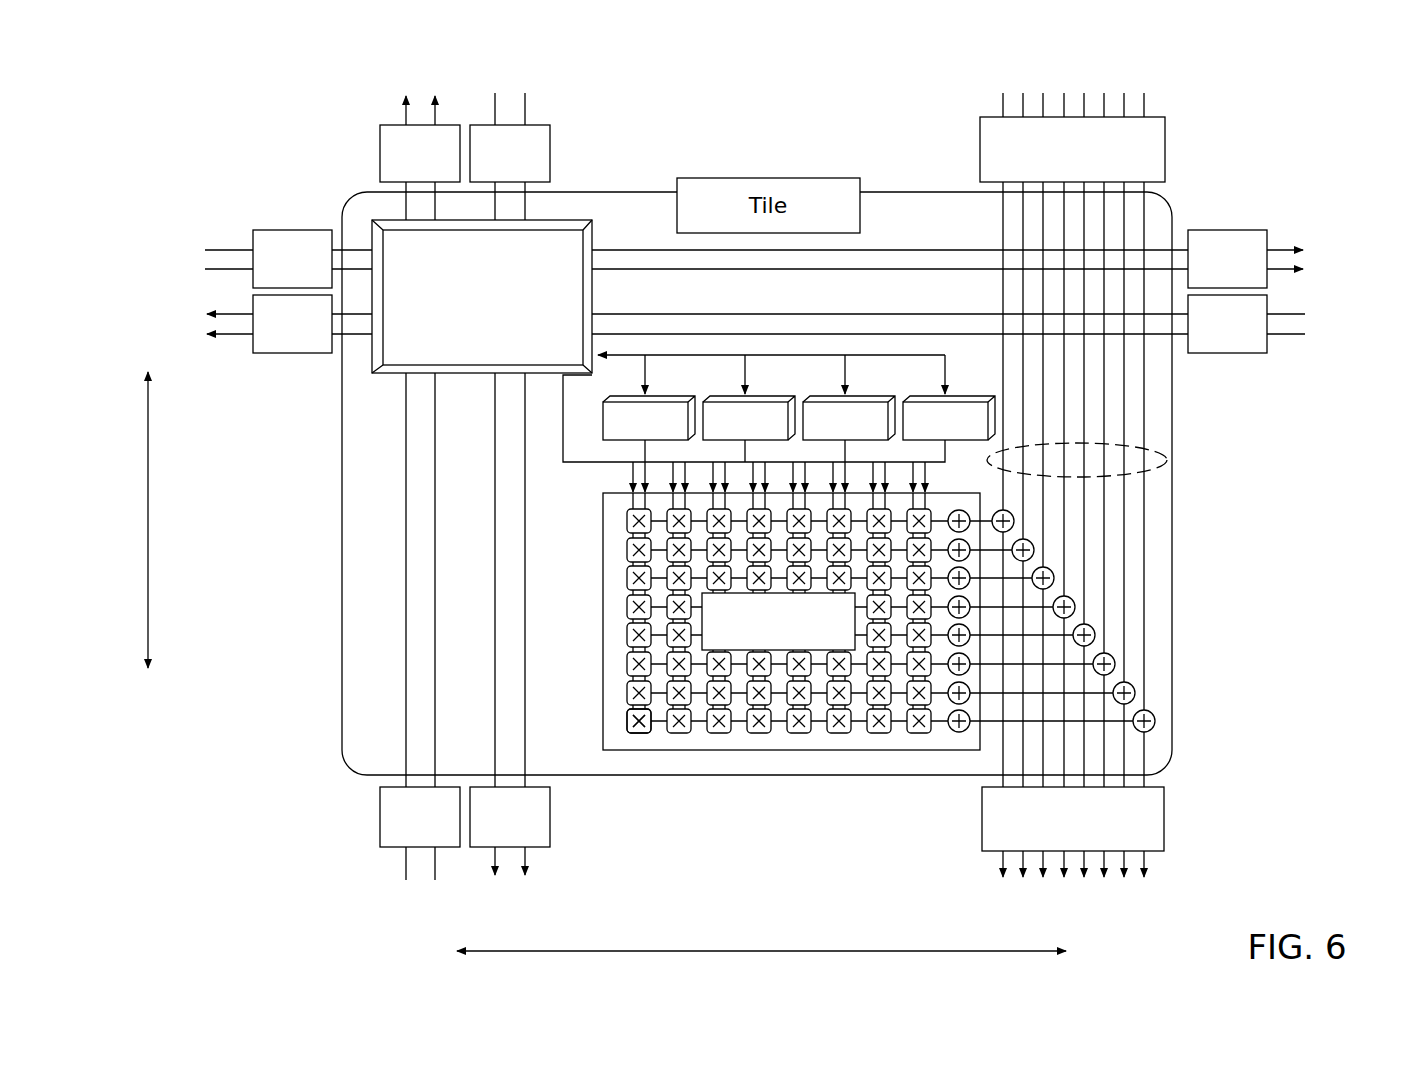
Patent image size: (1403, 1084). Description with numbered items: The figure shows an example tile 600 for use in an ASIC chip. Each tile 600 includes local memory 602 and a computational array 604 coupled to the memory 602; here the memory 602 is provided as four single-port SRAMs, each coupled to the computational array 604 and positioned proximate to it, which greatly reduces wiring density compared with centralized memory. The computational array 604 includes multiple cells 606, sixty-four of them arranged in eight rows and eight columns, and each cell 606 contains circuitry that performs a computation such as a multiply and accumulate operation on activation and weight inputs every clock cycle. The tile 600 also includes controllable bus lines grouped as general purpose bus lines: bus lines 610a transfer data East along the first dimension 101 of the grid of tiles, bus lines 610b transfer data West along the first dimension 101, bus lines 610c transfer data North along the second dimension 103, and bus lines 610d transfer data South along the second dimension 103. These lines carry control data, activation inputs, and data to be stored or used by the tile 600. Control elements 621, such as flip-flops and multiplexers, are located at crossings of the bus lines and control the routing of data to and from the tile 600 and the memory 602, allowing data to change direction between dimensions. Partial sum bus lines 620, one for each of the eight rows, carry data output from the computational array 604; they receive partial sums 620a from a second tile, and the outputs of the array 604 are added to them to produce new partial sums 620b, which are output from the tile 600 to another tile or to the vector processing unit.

The tile 600 is at (230, 82).
The first dimension 101 is at (764, 950).
The second dimension 103 is at (149, 518).
The local memory 602 is at (632, 395).
The computational array 604 is at (740, 750).
The cell 606 is at (640, 750).
The bus lines 610a is at (195, 234).
The bus lines 610b is at (1310, 295).
The bus lines 610c is at (380, 884).
The bus lines 610d is at (470, 81).
The partial sum bus lines 620 is at (1155, 453).
The partial sums 620a is at (1165, 152).
The new partial sums 620b is at (1165, 812).
The control elements 621 is at (410, 335).